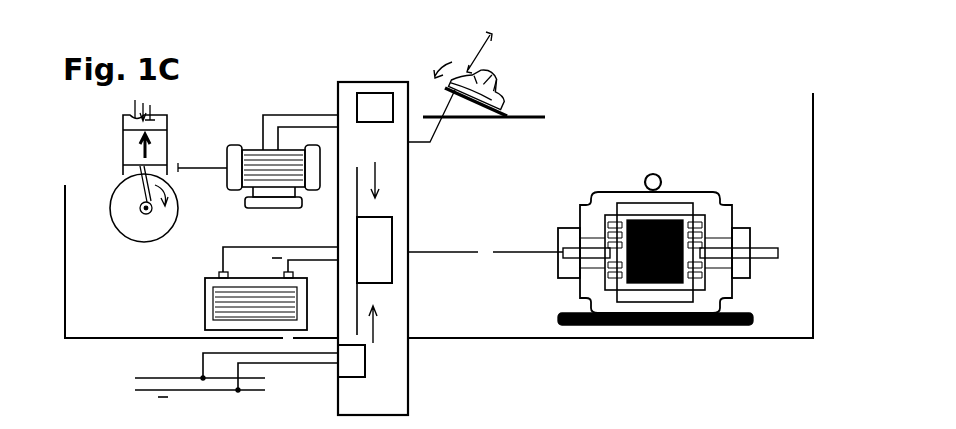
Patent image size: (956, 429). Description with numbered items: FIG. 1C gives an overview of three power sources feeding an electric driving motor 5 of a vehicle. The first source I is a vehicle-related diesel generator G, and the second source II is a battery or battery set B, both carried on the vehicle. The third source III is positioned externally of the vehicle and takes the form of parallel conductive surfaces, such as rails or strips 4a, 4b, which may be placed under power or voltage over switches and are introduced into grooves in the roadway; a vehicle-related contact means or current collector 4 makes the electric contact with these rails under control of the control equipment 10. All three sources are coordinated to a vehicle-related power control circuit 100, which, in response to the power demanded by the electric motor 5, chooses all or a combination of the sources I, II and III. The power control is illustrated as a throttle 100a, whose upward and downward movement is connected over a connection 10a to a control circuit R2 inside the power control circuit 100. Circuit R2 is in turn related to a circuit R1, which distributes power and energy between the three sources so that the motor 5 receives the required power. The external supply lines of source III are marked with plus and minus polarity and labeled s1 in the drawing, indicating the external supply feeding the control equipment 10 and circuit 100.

The power control circuit 100 is at (400, 405).
The throttle 100a is at (469, 70).
The control equipment 10 is at (355, 360).
The connection 10a is at (430, 142).
The electric driving motor 5 is at (680, 192).
The contact means 4 is at (226, 368).
The first rail 4a is at (269, 366).
The second rail 4b is at (287, 377).
The distributing circuit R1 is at (378, 265).
The control circuit R2 is at (363, 104).
The first vehicle-related power source I is at (168, 171).
The diesel generator G is at (256, 205).
The second vehicle-related power source II is at (146, 276).
The battery set B is at (213, 305).
The third power source III is at (88, 368).
The power source s1 is at (90, 403).